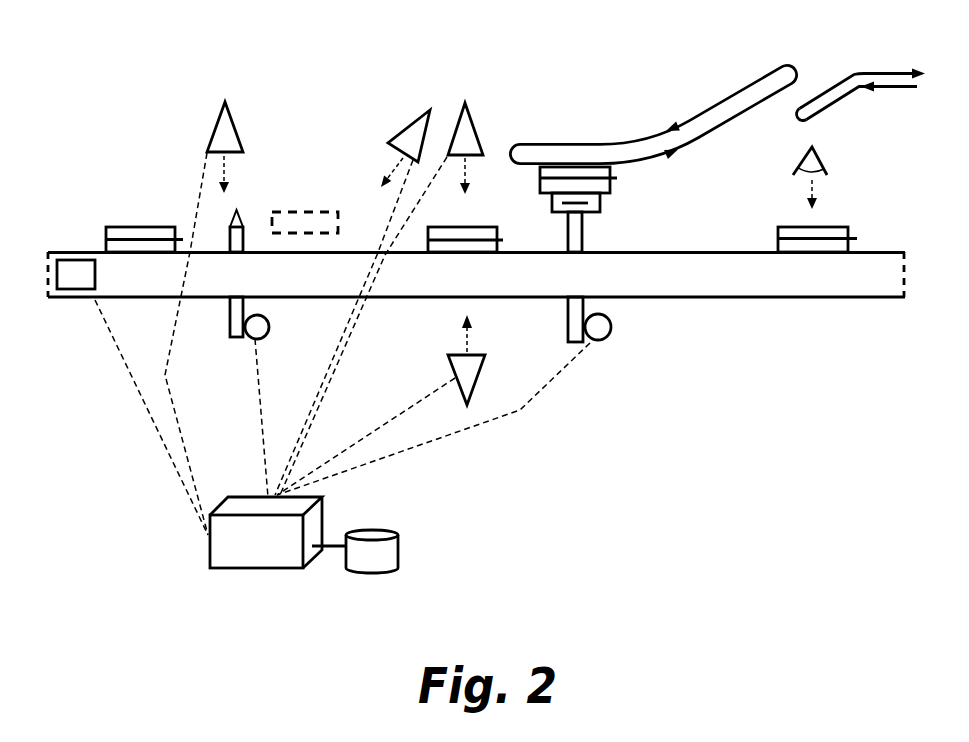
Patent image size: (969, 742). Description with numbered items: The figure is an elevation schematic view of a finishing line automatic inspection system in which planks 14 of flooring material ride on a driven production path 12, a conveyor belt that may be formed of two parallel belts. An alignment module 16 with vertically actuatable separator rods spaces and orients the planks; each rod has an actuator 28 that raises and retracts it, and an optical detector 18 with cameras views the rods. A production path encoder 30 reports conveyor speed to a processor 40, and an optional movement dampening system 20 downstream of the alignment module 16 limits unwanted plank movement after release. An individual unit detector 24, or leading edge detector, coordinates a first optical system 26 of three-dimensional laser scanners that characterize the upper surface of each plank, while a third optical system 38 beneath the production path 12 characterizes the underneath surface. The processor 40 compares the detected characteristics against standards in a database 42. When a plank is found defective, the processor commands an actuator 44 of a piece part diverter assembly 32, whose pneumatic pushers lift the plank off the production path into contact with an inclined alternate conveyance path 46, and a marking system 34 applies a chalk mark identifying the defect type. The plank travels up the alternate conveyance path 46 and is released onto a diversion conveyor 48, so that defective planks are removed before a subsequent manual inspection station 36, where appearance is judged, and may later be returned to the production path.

The driven production path 12 is at (67, 252).
The planks 14 is at (130, 227).
The alignment module 16 is at (231, 337).
The optical detector 18 is at (230, 113).
The movement dampening system 20 is at (290, 212).
The individual unit detector 24 is at (416, 122).
The first optical system 26 is at (471, 118).
The actuator 28 is at (270, 328).
The production path encoder 30 is at (76, 289).
The piece part diverter assembly 32 is at (556, 210).
The marking system 34 is at (596, 204).
The manual inspection station 36 is at (834, 169).
The third optical system 38 is at (450, 373).
The processor 40 is at (210, 560).
The database 42 is at (397, 533).
The actuator 44 is at (611, 330).
The alternate conveyance path 46 is at (713, 104).
The diversion conveyor 48 is at (857, 73).